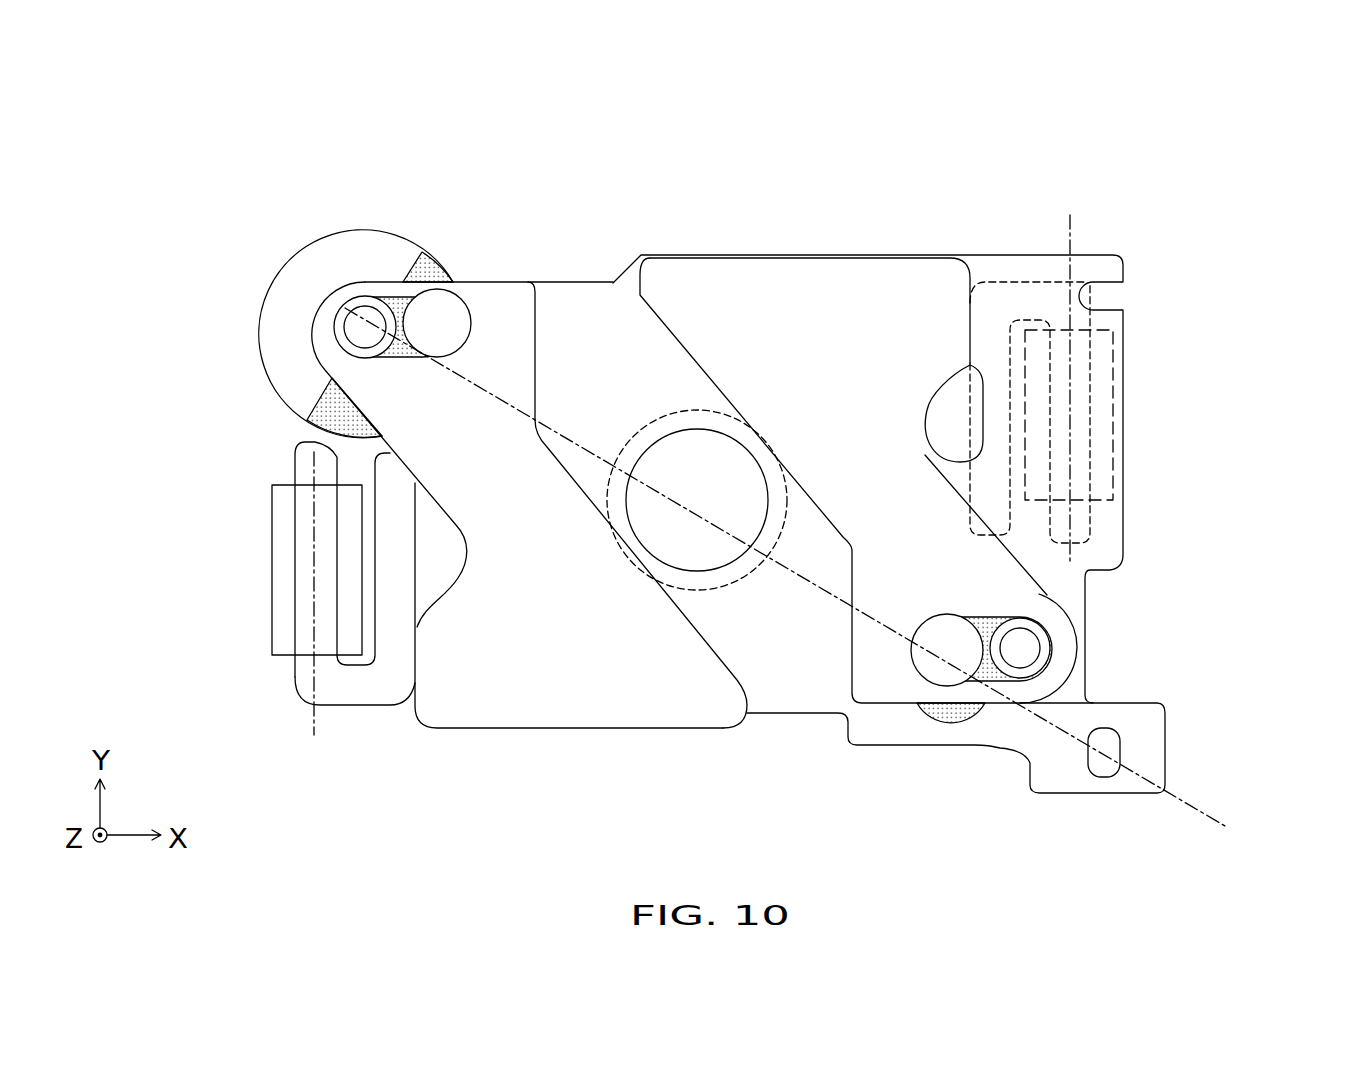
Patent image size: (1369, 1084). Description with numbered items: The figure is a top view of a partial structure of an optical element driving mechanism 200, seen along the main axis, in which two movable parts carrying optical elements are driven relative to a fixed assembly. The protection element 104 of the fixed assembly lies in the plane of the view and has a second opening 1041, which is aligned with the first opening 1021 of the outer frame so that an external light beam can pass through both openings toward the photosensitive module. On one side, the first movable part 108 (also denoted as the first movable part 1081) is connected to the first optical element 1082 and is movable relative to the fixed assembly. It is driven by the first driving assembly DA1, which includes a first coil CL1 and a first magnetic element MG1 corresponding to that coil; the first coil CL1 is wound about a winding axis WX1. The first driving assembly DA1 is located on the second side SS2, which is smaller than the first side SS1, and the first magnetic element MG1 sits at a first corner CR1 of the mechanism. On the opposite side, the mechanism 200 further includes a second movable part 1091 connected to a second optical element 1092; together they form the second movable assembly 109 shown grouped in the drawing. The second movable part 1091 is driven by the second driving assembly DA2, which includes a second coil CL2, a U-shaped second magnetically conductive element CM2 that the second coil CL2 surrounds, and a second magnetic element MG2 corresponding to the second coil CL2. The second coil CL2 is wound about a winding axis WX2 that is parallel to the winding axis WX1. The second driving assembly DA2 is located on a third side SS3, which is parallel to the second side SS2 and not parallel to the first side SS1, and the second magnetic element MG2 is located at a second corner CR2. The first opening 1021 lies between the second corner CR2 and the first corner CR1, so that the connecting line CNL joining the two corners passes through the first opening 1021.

The optical element driving mechanism 200 is at (137, 101).
The first connecting assembly 109 is at (622, 168).
The second movable part 1091 is at (437, 323).
The second optical element 1092 is at (510, 313).
The first opening 1021 is at (697, 410).
The protection element 104 is at (998, 268).
The winding axis of the first coil WX1 is at (1070, 376).
The second side SS2 is at (1148, 359).
The first coil CL1 is at (1113, 443).
The first magnetic element MG1 is at (1100, 597).
The first driving assembly DA1 is at (1257, 430).
The first optical element 1082 is at (995, 597).
The first movable part 1081 is at (950, 645).
The first movable part 108 is at (1257, 608).
The connecting line CNL is at (1213, 810).
The first corner CR1 is at (1176, 805).
The first side SS1 is at (791, 746).
The second opening 1041 is at (639, 541).
The winding axis of the second coil WX2 is at (316, 620).
The second magnetically conductive element CM2 is at (303, 673).
The second coil CL2 is at (285, 575).
The second magnetic element MG2 is at (297, 378).
The second driving assembly DA2 is at (160, 520).
The third side SS3 is at (186, 436).
The second corner CR2 is at (264, 239).